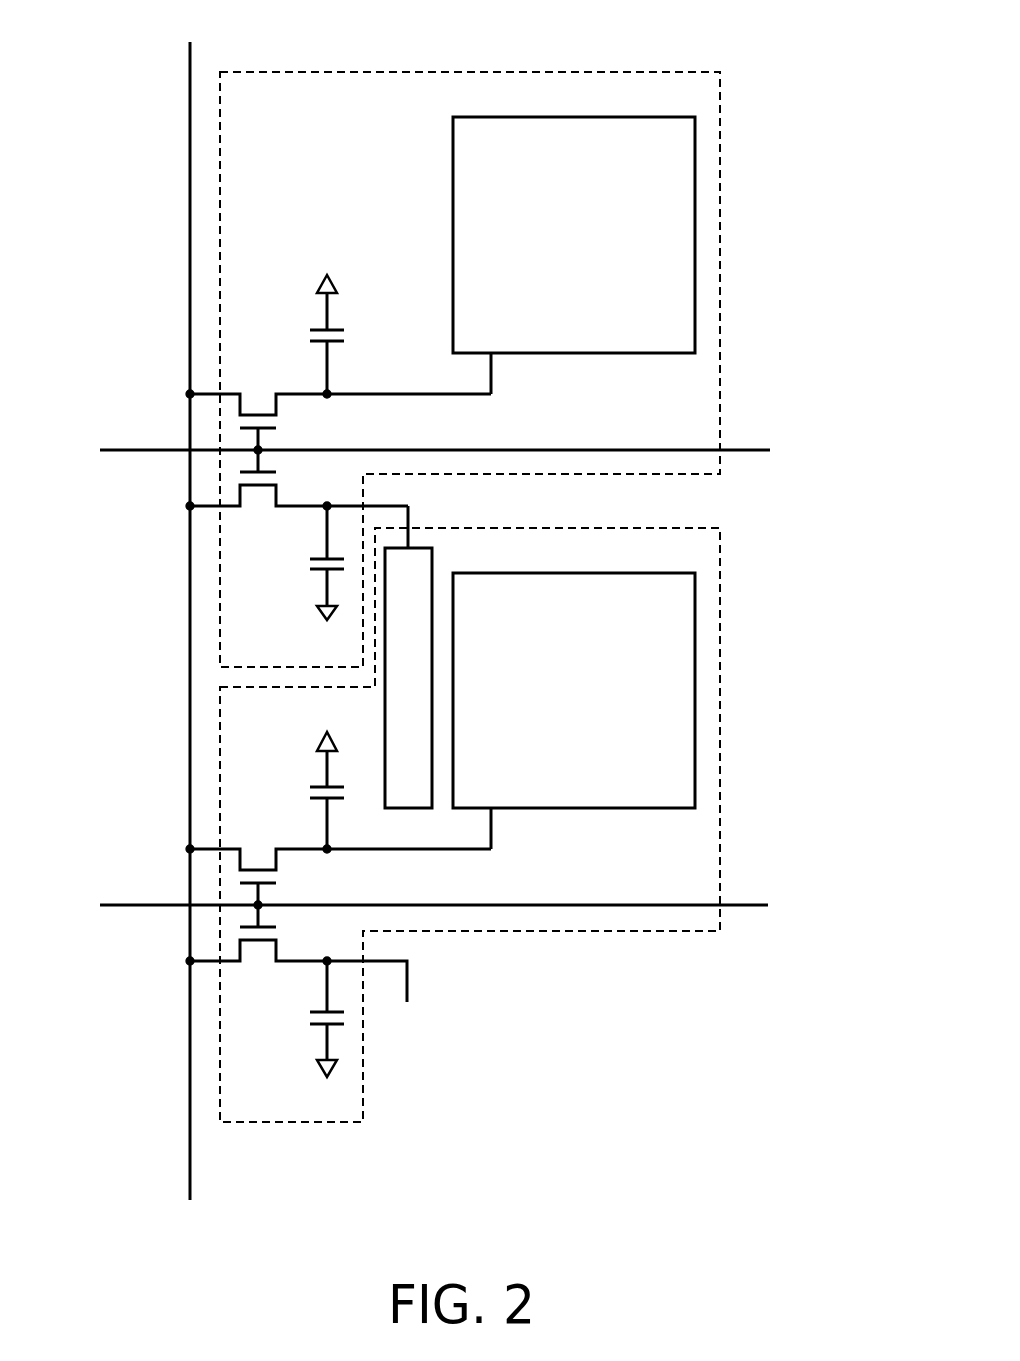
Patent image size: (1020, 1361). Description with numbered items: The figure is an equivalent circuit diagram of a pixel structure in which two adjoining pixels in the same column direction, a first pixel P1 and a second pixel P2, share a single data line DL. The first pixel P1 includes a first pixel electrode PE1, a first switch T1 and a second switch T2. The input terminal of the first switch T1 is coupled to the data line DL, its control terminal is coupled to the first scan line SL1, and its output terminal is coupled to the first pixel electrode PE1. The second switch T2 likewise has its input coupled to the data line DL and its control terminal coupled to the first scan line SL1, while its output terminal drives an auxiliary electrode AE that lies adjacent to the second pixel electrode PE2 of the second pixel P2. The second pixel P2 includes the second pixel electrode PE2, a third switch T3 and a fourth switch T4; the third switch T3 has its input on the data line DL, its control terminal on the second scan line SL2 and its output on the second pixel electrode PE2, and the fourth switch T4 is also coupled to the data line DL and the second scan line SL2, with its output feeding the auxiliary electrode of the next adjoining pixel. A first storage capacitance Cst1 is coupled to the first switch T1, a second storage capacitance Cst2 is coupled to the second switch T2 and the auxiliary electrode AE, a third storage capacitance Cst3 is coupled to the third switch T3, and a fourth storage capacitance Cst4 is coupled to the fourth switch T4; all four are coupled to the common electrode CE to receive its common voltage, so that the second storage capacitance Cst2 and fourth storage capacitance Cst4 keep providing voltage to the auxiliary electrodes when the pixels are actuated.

The data line DL is at (198, 602).
The first scan line SL1 is at (407, 451).
The second scan line SL2 is at (406, 906).
The first pixel P1 is at (720, 272).
The second pixel P2 is at (720, 729).
The first pixel electrode PE1 is at (548, 253).
The second pixel electrode PE2 is at (548, 706).
The auxiliary electrode AE is at (428, 694).
The first switch T1 is at (338, 410).
The second switch T2 is at (297, 493).
The third switch T3 is at (338, 866).
The fourth switch T4 is at (296, 953).
The first storage capacitance Cst1 is at (294, 345).
The second storage capacitance Cst2 is at (294, 554).
The third storage capacitance Cst3 is at (294, 802).
The fourth storage capacitance Cst4 is at (294, 1008).
The common electrode CE is at (327, 679).